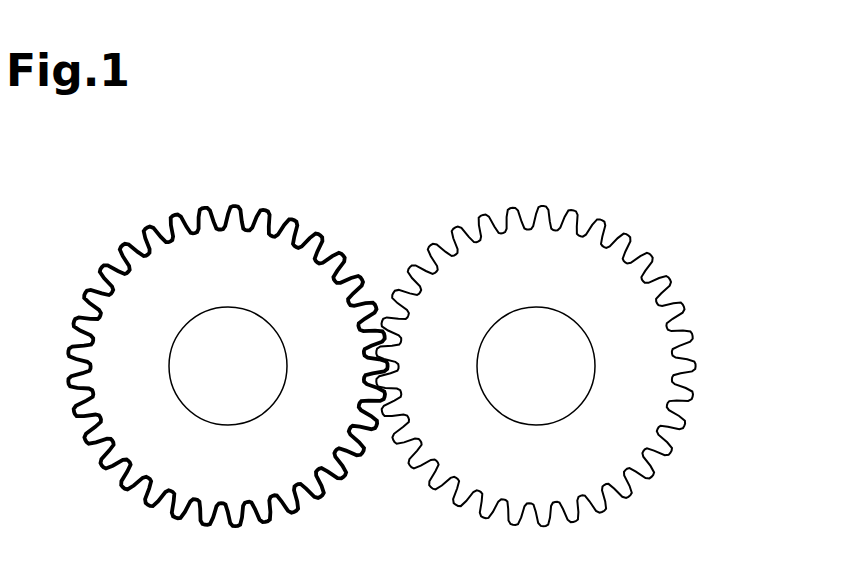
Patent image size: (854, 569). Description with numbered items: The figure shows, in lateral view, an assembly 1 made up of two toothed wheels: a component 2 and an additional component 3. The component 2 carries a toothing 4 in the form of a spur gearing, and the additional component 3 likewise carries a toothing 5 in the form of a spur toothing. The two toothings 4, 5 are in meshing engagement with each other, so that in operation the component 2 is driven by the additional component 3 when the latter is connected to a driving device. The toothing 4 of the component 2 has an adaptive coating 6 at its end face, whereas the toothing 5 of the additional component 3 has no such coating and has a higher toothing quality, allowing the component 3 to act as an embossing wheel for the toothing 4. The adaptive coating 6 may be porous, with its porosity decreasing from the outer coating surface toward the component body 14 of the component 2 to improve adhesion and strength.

The assembly 1 is at (582, 108).
The component 2 is at (302, 178).
The additional component 3 is at (692, 268).
The toothing 4 is at (338, 248).
The toothing 5 is at (621, 232).
The adaptive coating 6 is at (193, 208).
The component body 14 is at (180, 318).